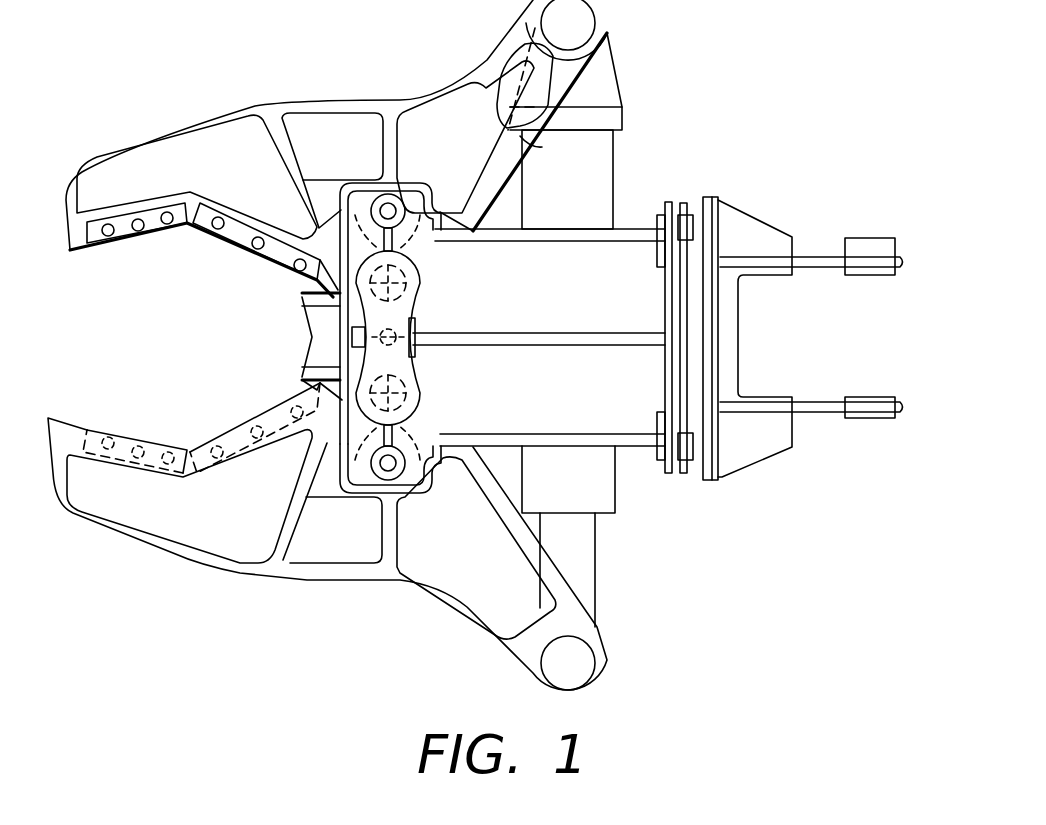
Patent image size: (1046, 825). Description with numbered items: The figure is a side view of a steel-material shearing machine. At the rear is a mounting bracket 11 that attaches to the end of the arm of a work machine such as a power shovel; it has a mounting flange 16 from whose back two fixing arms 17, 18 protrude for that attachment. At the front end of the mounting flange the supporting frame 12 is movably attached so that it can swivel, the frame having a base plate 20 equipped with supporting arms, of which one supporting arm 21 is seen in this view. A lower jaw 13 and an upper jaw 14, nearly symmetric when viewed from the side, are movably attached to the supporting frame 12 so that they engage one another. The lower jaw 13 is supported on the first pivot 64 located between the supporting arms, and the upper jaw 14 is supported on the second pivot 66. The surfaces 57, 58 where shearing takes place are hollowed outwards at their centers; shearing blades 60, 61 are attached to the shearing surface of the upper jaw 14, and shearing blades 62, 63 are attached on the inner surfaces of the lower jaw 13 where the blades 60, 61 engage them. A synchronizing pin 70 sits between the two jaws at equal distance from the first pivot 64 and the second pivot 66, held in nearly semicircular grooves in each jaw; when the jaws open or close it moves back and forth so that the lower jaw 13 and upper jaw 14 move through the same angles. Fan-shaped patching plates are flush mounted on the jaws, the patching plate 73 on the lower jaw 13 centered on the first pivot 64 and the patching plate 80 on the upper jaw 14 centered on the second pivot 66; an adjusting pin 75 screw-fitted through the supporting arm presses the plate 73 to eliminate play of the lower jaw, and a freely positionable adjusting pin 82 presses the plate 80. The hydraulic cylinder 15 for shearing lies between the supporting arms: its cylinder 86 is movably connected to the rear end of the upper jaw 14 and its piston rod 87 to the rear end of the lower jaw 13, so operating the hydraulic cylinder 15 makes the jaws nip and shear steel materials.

The mounting bracket 11 is at (805, 245).
The supporting frame 12 is at (623, 215).
The lower jaw 13 is at (297, 552).
The upper jaw 14 is at (335, 123).
The hydraulic cylinder 15 is at (628, 103).
The mounting flange 16 is at (712, 200).
The fixing arm 17 is at (818, 262).
The fixing arm 18 is at (820, 408).
The base plate 20 is at (666, 291).
The supporting arm 21 is at (576, 397).
The shearing surface 57 is at (185, 432).
The shearing surface 58 is at (183, 247).
The shearing blade 60 is at (148, 240).
The shearing blade 61 is at (270, 262).
The shearing blade 62 is at (138, 440).
The shearing blade 63 is at (275, 415).
The first pivot 64 is at (395, 393).
The second pivot 66 is at (395, 283).
The synchronizing pin 70 is at (412, 327).
The patching plate 73 is at (428, 470).
The adjusting pin 75 is at (378, 480).
The patching plate 80 is at (415, 205).
The adjusting pin 82 is at (388, 208).
The cylinder 86 is at (513, 128).
The piston rod 87 is at (595, 562).